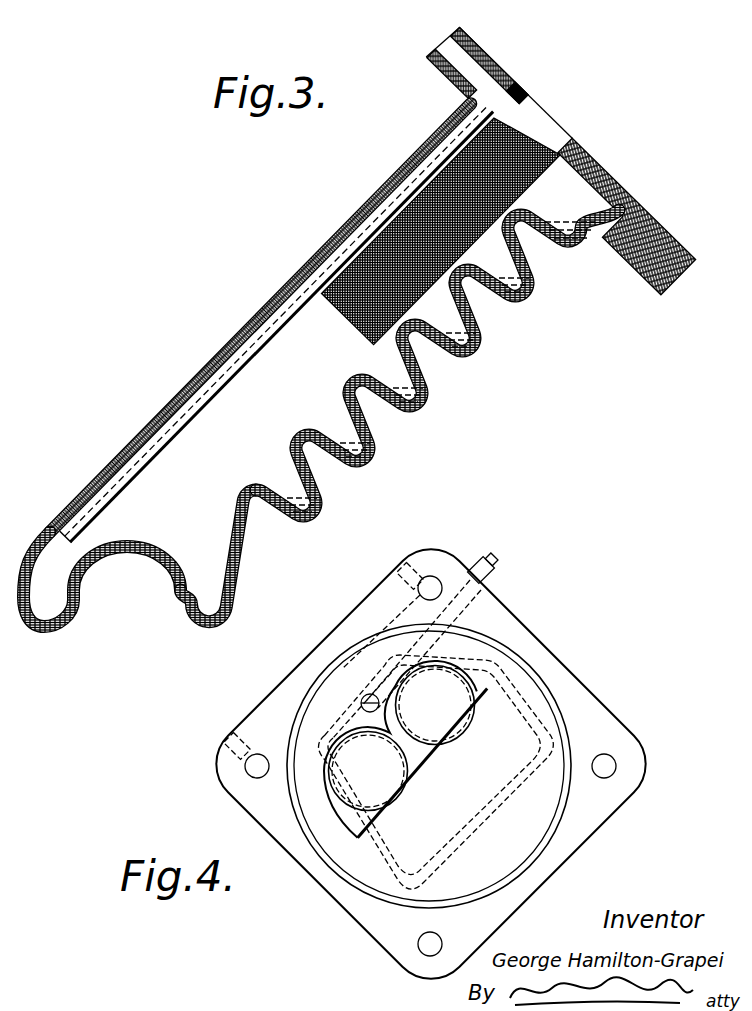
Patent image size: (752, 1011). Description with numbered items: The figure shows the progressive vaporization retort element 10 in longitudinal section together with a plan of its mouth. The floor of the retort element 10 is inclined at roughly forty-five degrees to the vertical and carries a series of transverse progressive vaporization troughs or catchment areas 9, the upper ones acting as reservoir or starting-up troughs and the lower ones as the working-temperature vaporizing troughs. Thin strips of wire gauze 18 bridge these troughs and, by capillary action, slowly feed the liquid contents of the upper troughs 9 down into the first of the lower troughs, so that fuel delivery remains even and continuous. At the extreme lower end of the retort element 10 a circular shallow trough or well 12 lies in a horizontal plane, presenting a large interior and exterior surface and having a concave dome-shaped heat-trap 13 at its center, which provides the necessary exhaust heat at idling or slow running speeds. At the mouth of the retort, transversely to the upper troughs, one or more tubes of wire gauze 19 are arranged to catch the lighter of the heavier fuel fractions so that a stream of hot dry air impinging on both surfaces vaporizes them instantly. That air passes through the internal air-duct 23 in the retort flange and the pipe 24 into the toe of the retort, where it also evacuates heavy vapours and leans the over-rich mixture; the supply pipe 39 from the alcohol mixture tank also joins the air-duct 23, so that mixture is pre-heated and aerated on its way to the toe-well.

In FIG. 3, the progressive vaporization troughs 9 is at (441, 348).
In FIG. 3, the retort element 10 is at (260, 318).
In FIG. 4, the retort element 10 is at (480, 692).
In FIG. 3, the circular shallow trough or well 12 is at (216, 601).
In FIG. 3, the heat-trap 13 is at (143, 541).
In FIG. 3, the strips of wire gauze 18 is at (494, 309).
In FIG. 3, the tubes of wire gauze 19 is at (351, 324).
In FIG. 4, the tubes of wire gauze 19 is at (426, 739).
In FIG. 3, the air-duct 23 is at (455, 52).
In FIG. 4, the air-duct 23 is at (329, 654).
In FIG. 3, the pipe 24 is at (153, 461).
In FIG. 4, the supply pipe 39 is at (489, 556).